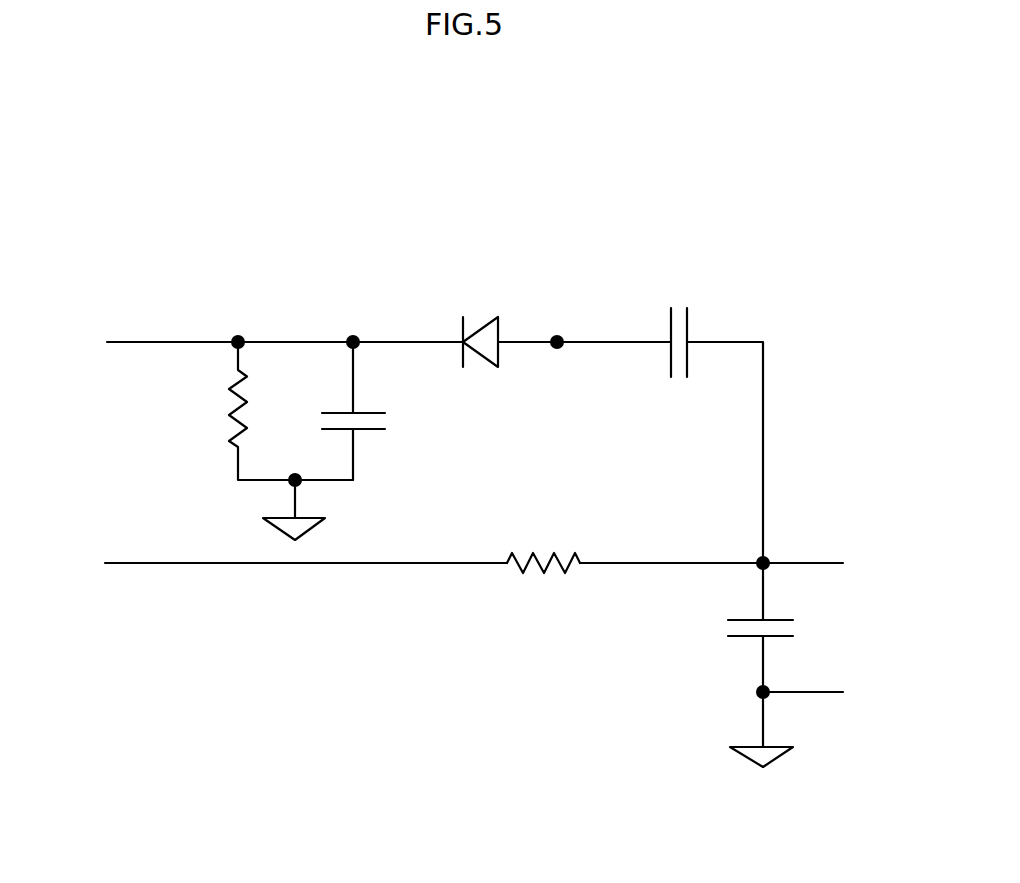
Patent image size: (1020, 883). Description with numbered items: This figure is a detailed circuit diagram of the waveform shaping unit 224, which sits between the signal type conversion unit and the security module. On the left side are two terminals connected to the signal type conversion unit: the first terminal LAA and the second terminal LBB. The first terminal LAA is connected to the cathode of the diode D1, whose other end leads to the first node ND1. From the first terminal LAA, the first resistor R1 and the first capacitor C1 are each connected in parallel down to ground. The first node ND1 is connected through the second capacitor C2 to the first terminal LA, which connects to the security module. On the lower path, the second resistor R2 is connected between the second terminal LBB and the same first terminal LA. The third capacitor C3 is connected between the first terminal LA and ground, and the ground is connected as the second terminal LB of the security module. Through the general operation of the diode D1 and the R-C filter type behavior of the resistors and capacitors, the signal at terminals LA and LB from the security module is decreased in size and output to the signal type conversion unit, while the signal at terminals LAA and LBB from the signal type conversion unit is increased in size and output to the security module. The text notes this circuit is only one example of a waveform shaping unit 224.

The waveform shaping unit 224 is at (735, 247).
The first terminal LAA is at (252, 340).
The second terminal LBB is at (276, 565).
The first resistor R1 is at (267, 411).
The first capacitor C1 is at (378, 411).
The diode D1 is at (485, 325).
The first node ND1 is at (557, 334).
The second capacitor C2 is at (681, 323).
The second resistor R2 is at (543, 546).
The third capacitor C3 is at (784, 628).
The first terminal LA is at (730, 568).
The second terminal LB is at (818, 692).